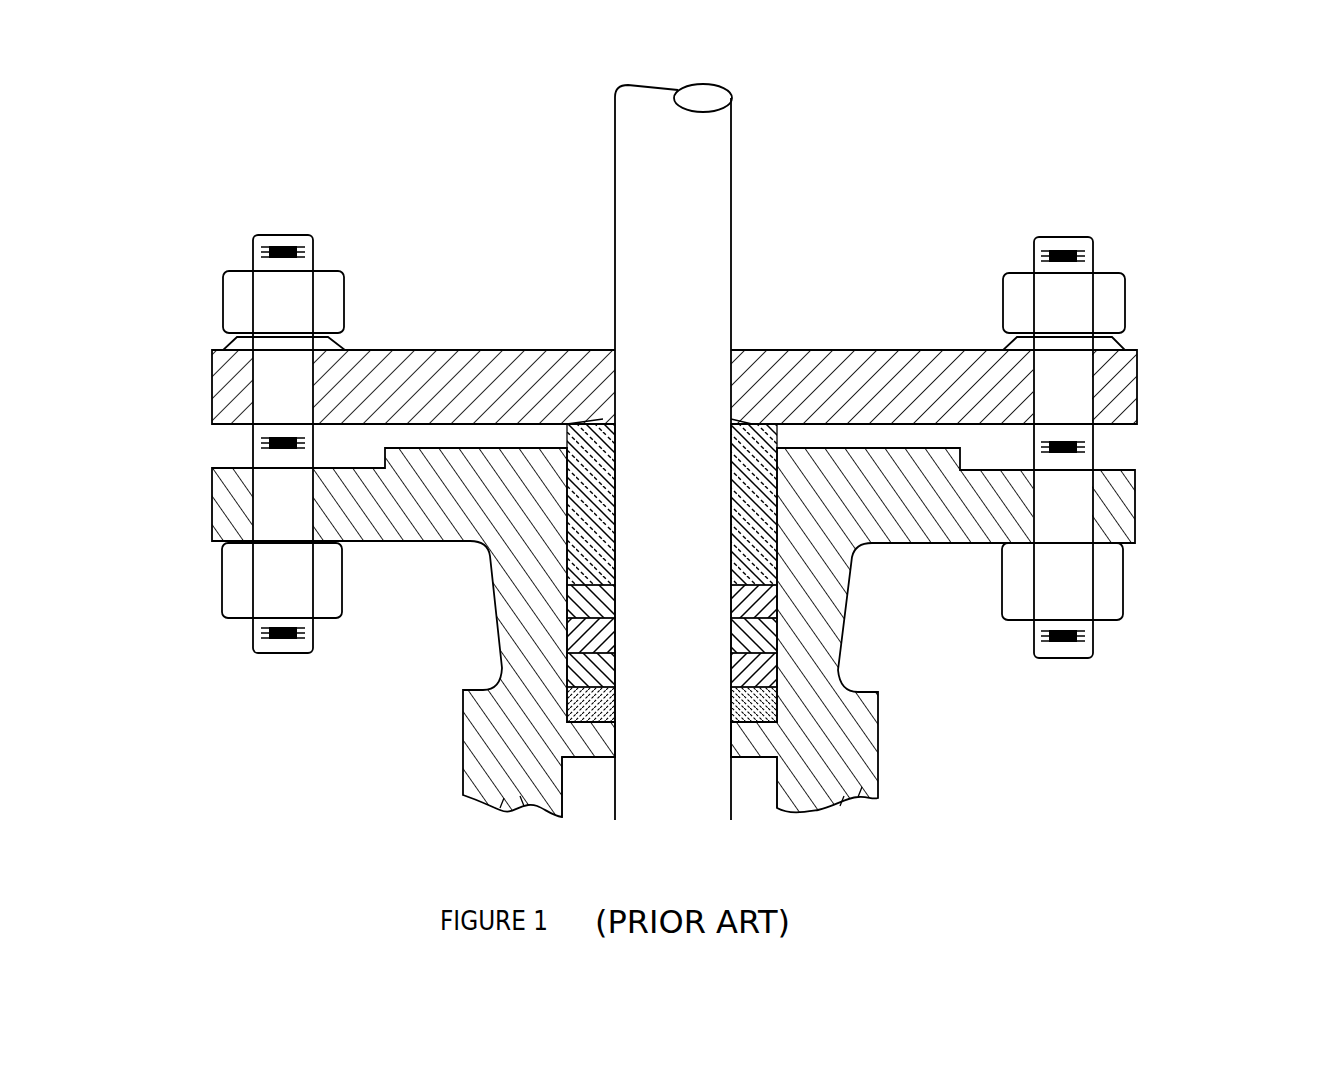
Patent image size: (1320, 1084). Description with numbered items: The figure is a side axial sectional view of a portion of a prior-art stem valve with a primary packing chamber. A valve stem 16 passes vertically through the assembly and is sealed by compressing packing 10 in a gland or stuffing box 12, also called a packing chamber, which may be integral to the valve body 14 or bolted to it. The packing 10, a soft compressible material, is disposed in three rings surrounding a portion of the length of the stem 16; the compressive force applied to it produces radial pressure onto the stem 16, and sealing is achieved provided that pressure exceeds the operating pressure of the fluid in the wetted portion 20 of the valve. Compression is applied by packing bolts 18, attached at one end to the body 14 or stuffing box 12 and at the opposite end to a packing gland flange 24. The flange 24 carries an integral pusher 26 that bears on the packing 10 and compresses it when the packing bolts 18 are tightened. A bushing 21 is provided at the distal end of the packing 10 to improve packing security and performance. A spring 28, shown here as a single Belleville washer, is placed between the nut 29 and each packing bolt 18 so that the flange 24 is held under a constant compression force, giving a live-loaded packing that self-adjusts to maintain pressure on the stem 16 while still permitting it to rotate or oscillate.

The packing 10 is at (755, 672).
The stuffing box 12 is at (424, 639).
The valve body 14 is at (500, 725).
The valve stem 16 is at (682, 298).
The packing bolts 18 is at (257, 235).
The wetted portion 20 is at (782, 810).
The bushing 21 is at (778, 708).
The packing gland flange 24 is at (1143, 380).
The pusher 26 is at (570, 425).
The spring 28 is at (237, 345).
The nut 29 is at (328, 303).